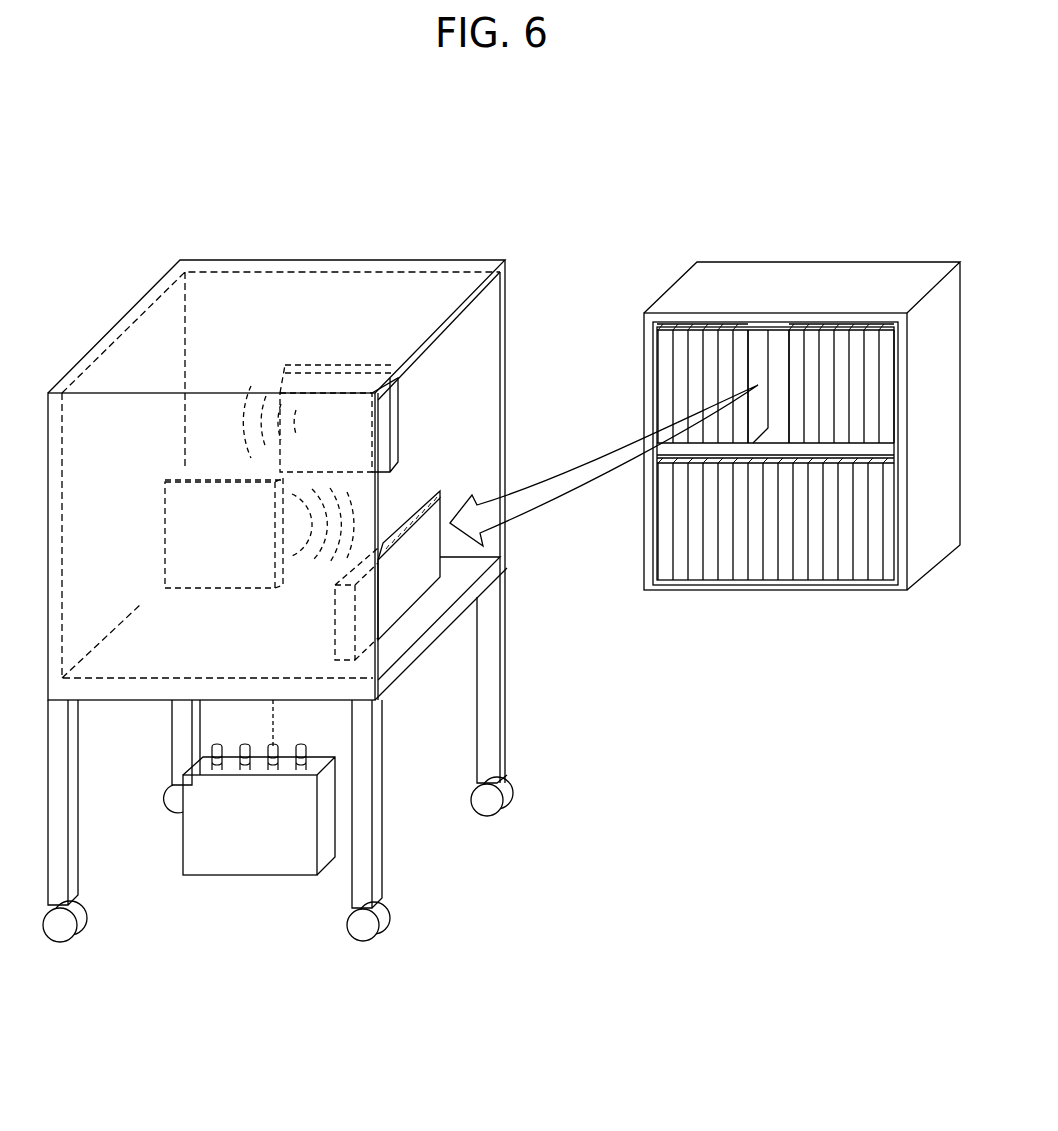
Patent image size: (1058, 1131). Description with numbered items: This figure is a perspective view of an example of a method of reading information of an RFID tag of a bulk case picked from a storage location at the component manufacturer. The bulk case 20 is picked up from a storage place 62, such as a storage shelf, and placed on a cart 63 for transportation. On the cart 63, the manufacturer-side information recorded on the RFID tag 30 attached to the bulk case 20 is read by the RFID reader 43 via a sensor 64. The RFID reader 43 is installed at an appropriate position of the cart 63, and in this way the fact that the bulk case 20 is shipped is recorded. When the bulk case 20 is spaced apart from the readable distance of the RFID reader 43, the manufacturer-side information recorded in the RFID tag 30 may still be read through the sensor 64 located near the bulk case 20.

The bulk case 20 is at (433, 565).
The RFID tag 30 is at (423, 497).
The RFID reader 43 is at (193, 843).
The storage place 62 is at (785, 275).
The cart 63 is at (350, 265).
The sensor 64 is at (395, 405).